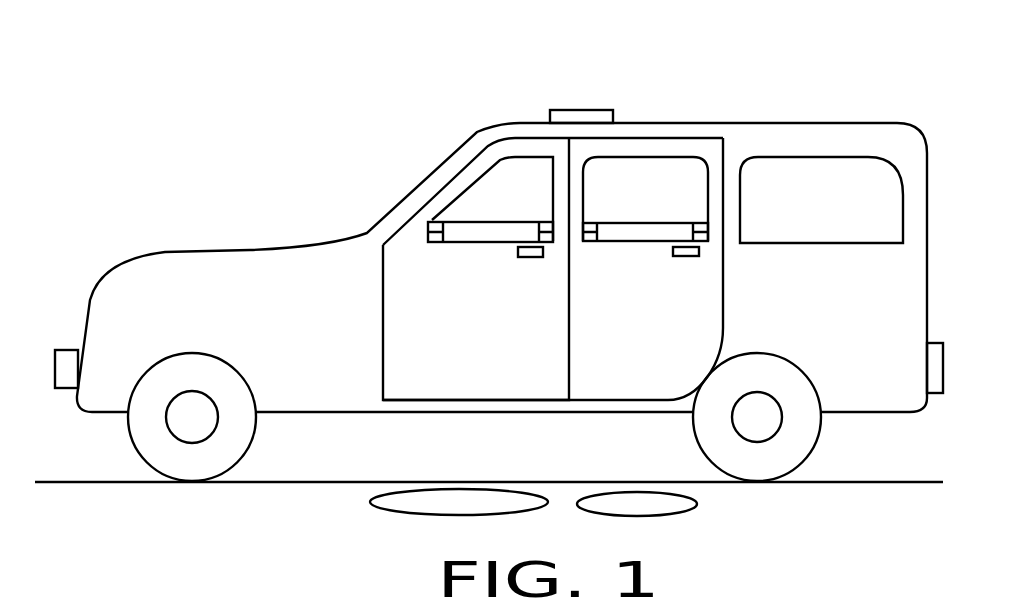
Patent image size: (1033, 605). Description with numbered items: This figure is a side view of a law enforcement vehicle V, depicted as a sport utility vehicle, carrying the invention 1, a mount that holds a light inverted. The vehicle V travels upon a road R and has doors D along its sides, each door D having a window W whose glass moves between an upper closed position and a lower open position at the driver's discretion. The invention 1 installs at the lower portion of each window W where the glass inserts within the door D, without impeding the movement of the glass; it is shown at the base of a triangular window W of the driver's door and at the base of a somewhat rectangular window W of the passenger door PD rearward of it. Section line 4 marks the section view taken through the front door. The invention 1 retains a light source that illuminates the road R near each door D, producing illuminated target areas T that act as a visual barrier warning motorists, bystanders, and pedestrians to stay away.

The vehicle V is at (249, 250).
The door D is at (407, 265).
The window W is at (487, 190).
The invention 1 is at (457, 220).
The road R is at (78, 480).
The target area T is at (452, 503).
The section line 4- 4 is at (482, 143).
The passenger door PD is at (476, 333).